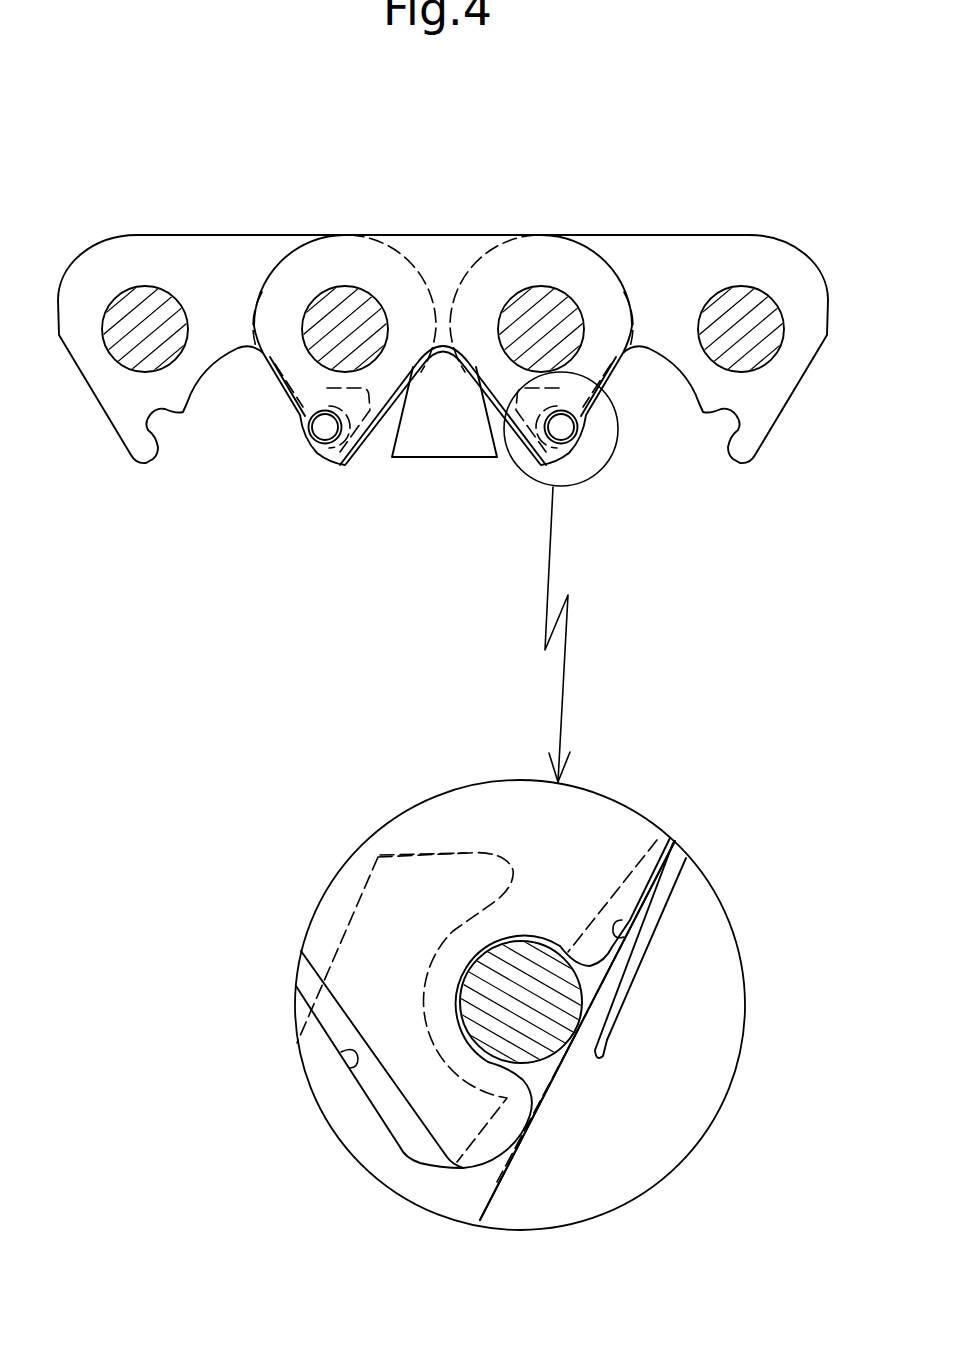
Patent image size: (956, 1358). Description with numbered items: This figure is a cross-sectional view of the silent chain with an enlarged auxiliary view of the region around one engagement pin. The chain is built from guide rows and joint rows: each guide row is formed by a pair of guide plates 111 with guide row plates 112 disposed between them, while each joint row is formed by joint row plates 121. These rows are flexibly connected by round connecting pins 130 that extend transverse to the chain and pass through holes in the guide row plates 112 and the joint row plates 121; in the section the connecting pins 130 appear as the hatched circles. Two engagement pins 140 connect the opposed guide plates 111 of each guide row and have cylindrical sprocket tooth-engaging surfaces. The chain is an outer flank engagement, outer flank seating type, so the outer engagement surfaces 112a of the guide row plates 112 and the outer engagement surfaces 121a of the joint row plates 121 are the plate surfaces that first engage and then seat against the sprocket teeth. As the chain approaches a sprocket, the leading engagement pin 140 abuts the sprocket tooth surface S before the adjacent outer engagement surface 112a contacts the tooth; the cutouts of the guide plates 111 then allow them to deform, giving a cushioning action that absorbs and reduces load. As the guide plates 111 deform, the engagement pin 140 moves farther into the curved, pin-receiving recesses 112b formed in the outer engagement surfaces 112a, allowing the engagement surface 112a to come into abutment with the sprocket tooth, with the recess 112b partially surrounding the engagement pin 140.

The guide plate 111 is at (447, 430).
The guide row plate 112 is at (445, 252).
The outer engagement surface 112a is at (622, 930).
The recess 112b is at (497, 857).
The joint row plate 121 is at (240, 257).
The outer engagement surface 121a is at (340, 1053).
The connecting pin 130 is at (143, 305).
The engagement pin 140 is at (307, 444).
The sprocket tooth surface S is at (500, 1187).